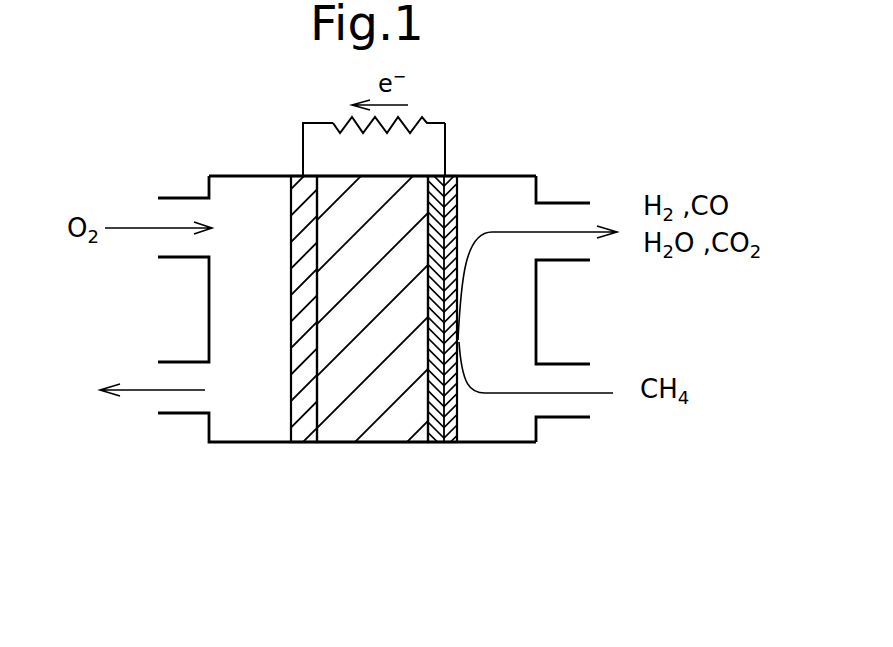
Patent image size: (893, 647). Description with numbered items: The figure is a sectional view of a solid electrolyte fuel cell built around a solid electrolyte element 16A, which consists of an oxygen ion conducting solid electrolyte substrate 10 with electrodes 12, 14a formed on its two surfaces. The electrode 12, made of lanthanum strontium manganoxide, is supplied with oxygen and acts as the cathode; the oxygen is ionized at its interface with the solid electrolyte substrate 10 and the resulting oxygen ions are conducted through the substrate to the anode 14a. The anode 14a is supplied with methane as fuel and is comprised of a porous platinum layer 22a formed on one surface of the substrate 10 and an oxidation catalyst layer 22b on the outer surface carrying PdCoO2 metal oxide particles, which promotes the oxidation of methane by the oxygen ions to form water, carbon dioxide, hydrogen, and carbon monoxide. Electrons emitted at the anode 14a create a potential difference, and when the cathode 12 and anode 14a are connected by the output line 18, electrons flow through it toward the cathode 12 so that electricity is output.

The solid electrolyte substrate 10 is at (380, 442).
The electrode (cathode) 12 is at (300, 446).
The electrode (anode) 14a is at (453, 343).
The solid electrolyte element 16A is at (386, 333).
The output line 18 is at (447, 139).
The porous platinum layer 22a is at (433, 177).
The oxidation catalyst layer 22b is at (448, 177).